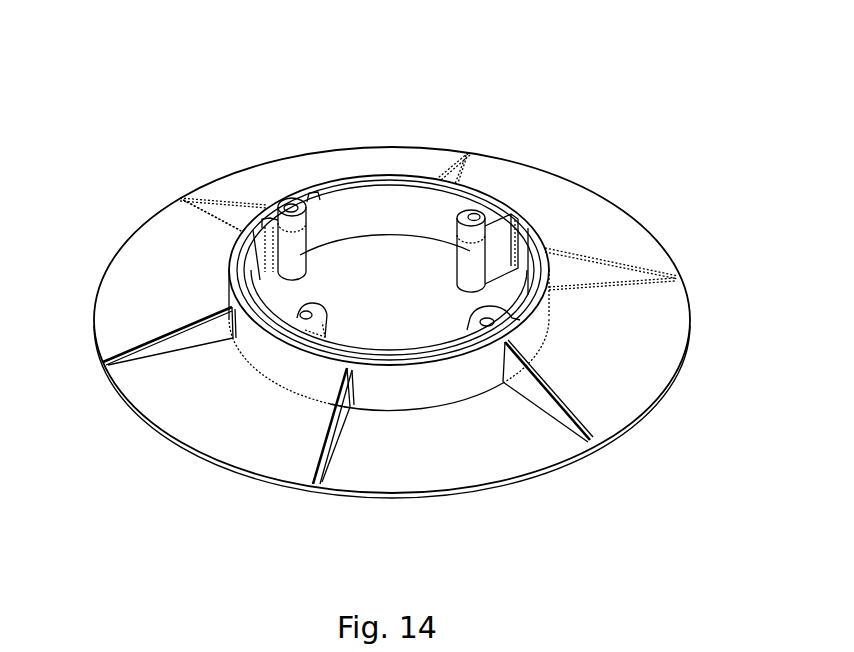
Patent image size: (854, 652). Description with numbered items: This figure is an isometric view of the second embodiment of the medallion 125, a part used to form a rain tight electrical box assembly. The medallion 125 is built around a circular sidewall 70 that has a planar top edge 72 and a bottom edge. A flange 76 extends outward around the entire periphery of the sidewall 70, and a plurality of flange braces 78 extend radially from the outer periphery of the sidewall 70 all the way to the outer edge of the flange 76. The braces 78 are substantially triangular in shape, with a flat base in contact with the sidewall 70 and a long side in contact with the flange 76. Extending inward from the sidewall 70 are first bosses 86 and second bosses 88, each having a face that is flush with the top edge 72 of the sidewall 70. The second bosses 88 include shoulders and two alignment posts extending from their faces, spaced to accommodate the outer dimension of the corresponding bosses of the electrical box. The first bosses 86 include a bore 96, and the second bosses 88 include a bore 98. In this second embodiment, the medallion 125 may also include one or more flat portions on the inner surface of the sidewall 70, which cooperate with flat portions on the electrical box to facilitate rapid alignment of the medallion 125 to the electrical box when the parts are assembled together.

The medallion 125 is at (145, 127).
The circular sidewall 70 is at (533, 337).
The planar top edge 72 is at (400, 176).
The flange 76 is at (495, 456).
The flange braces 78 is at (605, 260).
The first bosses 86 is at (472, 273).
The second bosses 88 is at (293, 258).
The bore 96 is at (474, 213).
The bore 98 is at (291, 204).